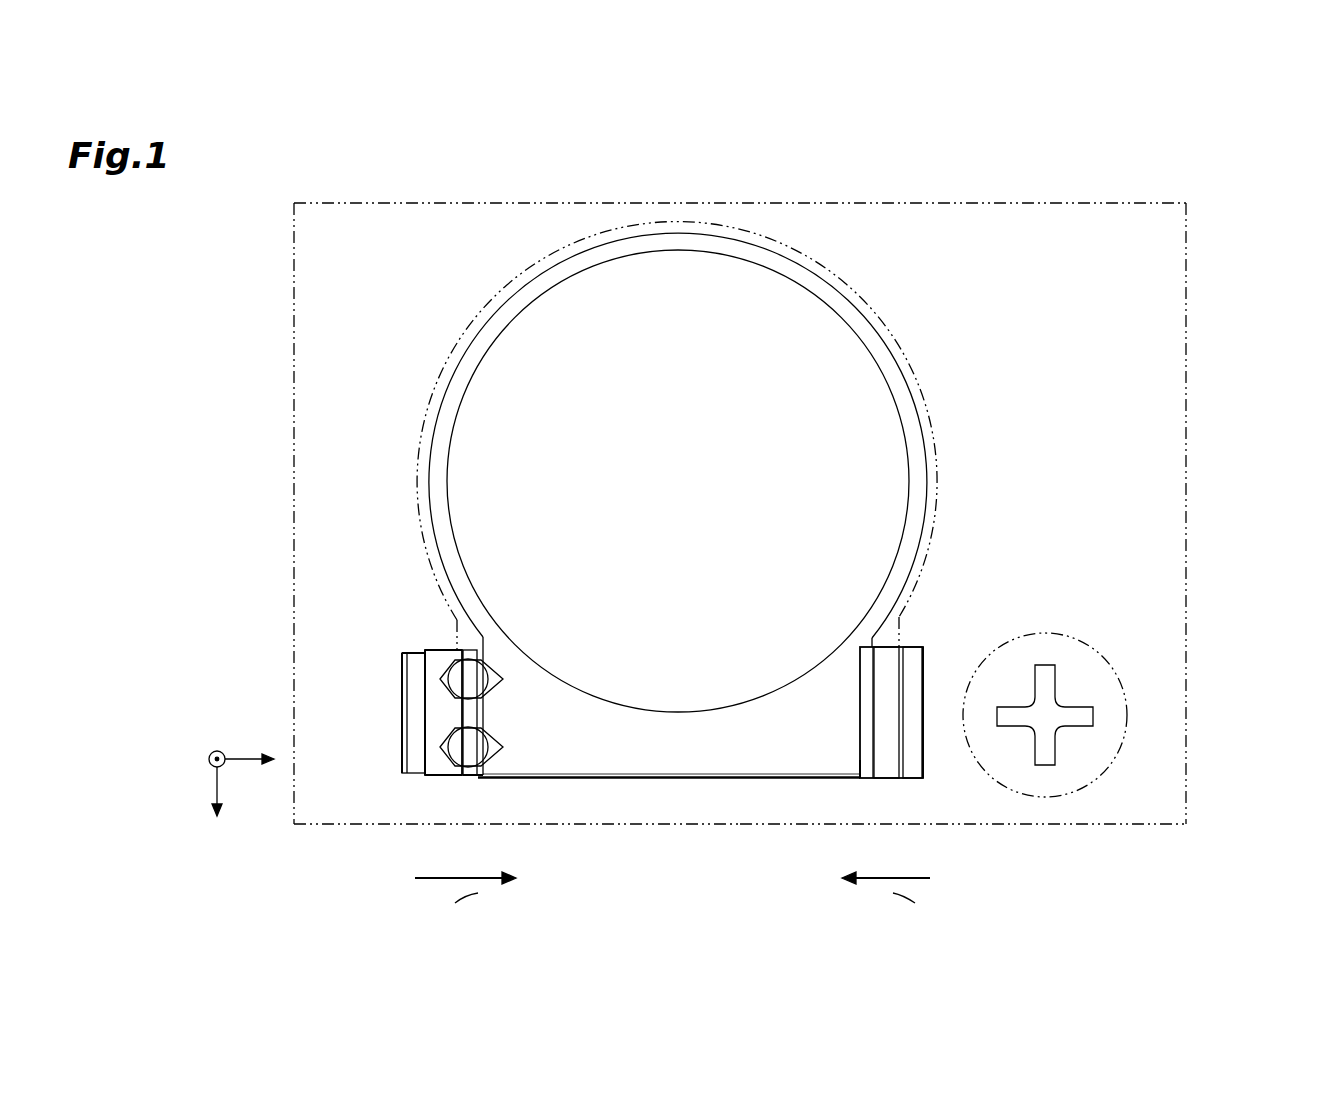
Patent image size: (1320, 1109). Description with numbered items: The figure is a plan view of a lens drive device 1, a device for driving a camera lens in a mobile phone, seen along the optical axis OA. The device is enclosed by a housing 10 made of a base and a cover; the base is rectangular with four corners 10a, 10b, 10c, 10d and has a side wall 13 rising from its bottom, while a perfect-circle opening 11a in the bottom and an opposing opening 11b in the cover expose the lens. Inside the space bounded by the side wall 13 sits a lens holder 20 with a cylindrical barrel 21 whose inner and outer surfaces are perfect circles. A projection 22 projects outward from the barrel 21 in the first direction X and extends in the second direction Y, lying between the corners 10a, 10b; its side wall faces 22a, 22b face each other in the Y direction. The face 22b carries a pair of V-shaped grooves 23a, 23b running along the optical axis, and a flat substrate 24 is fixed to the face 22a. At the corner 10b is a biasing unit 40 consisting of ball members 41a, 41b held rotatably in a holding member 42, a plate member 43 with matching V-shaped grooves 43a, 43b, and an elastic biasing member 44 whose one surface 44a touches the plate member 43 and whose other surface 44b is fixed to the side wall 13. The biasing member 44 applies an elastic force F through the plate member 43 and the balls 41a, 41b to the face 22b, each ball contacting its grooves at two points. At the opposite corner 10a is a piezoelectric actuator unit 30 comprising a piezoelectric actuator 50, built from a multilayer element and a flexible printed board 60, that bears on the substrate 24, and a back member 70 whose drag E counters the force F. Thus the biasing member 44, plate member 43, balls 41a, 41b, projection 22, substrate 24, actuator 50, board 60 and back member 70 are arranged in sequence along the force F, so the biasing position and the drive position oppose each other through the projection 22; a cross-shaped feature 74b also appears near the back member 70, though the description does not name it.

The lens drive device 1 is at (1232, 198).
The housing 10 is at (734, 526).
The corner 10a is at (965, 805).
The corner 10b is at (325, 800).
The corner 10c is at (318, 250).
The corner 10d is at (1160, 242).
The side wall 13 is at (413, 306).
The opening 11a is at (678, 481).
The opening 11b is at (736, 477).
The lens holder 20 is at (812, 278).
The barrel 21 is at (851, 318).
The projection 22 is at (723, 778).
The side wall face 22a is at (860, 758).
The side wall face 22b is at (476, 777).
The groove 23a is at (487, 742).
The groove 23b is at (487, 680).
The substrate 24 is at (866, 690).
The piezoelectric actuator unit 30 is at (899, 654).
The biasing unit 40 is at (448, 677).
The ball member 41a is at (485, 745).
The ball member 41b is at (485, 672).
The holding member 42 is at (471, 770).
The plate member 43 is at (437, 770).
The groove 43a is at (440, 750).
The groove 43b is at (443, 690).
The biasing member 44 is at (413, 720).
The surface 44a is at (450, 652).
The surface 44b is at (420, 685).
The piezoelectric actuator 50 is at (893, 668).
The flexible printed board 60 is at (925, 705).
The back member 70 is at (915, 725).
The cross-shaped opening 74b is at (922, 708).